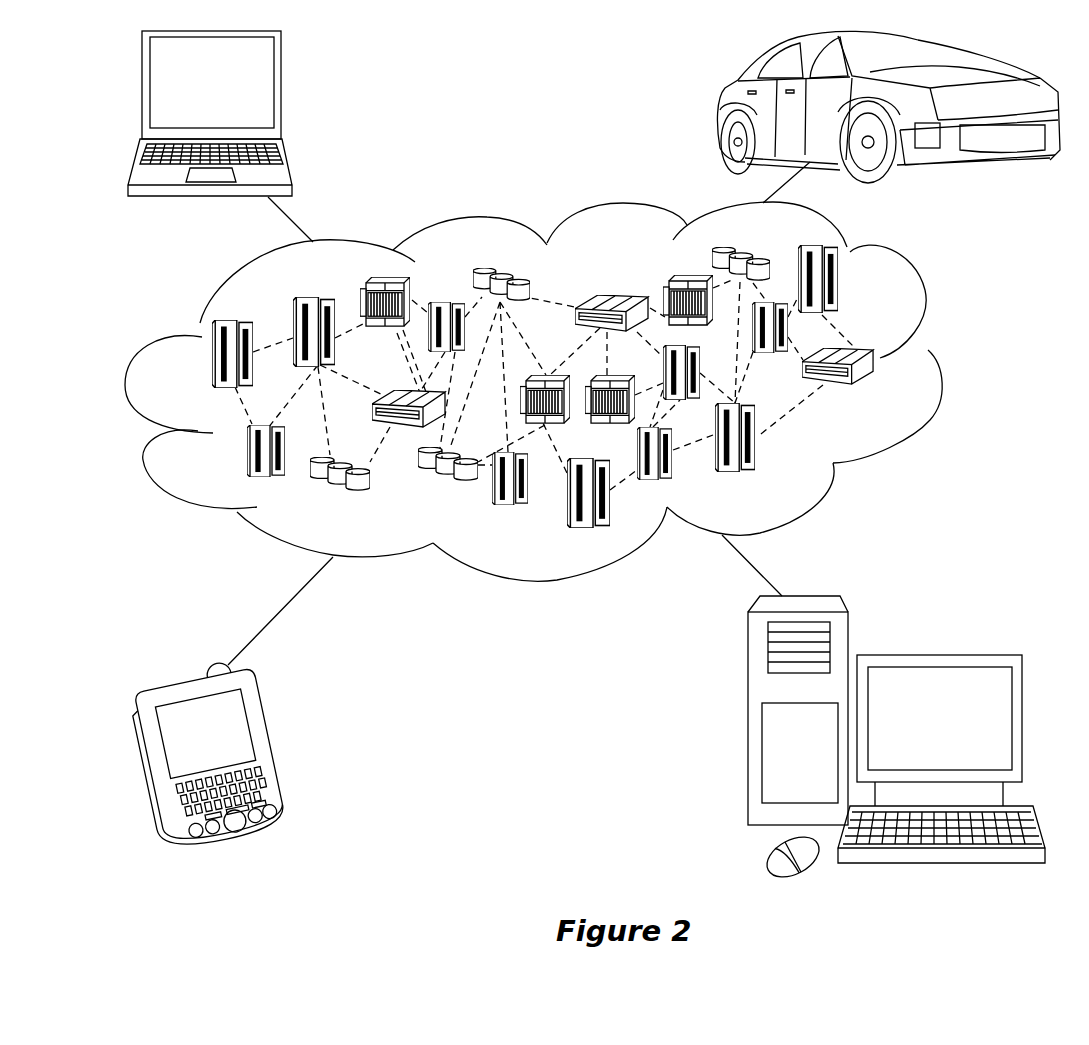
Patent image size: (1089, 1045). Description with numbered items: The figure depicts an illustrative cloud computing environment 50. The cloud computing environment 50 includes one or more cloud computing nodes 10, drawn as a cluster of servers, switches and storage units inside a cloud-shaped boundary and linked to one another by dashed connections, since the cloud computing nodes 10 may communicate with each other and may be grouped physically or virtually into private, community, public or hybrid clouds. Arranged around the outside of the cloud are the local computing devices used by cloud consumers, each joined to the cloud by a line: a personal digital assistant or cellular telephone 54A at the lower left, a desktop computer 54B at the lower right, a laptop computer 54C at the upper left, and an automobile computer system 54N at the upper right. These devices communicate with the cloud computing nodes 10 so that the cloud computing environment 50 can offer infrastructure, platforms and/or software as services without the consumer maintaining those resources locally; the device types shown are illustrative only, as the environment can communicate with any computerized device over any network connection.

The personal digital assistant or cellular telephone 54A is at (272, 749).
The desktop computer 54B is at (937, 653).
The laptop computer 54C is at (280, 92).
The automobile computer system 54N is at (720, 108).
The cloud computing environment 50 is at (558, 391).
The cloud computing node 10 is at (880, 395).